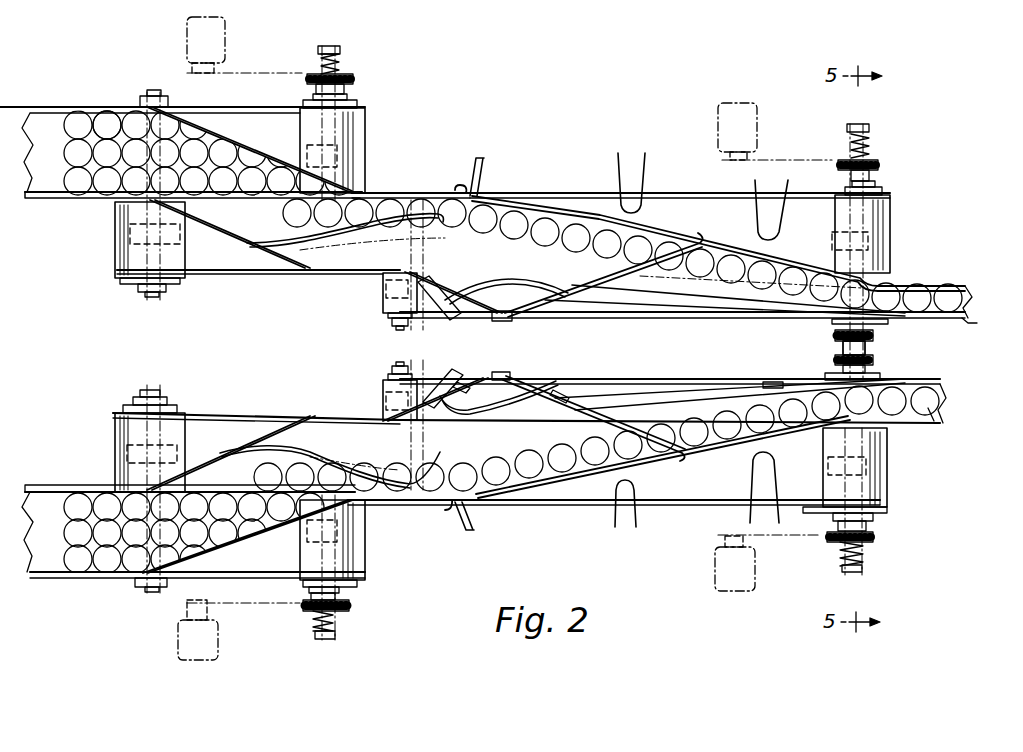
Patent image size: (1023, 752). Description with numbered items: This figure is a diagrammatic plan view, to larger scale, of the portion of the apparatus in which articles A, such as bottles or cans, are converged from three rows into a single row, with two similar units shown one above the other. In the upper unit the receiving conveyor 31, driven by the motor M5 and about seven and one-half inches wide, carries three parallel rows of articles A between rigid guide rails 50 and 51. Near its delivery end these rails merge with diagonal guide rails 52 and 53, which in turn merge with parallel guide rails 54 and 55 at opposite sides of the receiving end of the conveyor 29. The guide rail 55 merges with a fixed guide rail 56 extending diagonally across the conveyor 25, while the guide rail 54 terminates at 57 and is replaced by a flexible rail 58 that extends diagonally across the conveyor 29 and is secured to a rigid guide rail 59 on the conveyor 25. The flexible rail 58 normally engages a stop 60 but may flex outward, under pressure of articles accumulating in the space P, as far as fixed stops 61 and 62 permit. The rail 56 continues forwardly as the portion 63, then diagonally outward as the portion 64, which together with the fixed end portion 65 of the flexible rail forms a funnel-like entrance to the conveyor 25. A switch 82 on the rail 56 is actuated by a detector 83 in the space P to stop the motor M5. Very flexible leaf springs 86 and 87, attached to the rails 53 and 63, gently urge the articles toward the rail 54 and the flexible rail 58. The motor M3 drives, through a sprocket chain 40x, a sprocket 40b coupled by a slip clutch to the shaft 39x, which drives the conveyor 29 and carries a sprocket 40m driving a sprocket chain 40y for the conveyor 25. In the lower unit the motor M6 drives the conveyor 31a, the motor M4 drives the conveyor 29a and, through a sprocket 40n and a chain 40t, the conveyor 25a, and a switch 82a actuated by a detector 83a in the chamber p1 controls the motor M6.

The guide rail 50 is at (48, 108).
The articles A is at (103, 113).
The receiving conveyor 31 is at (161, 152).
The guide rail 51 is at (62, 200).
The diagonal guide rail 52 is at (252, 150).
The diagonal guide rail 53 is at (231, 234).
The flexible leaf spring 86 is at (309, 240).
The guide rail 55 is at (364, 273).
The guide rail 54 is at (401, 193).
The termination of guide rail 57 is at (458, 189).
The stop 60 is at (481, 172).
The conveyor 29 is at (692, 218).
The flexible guide rail 58 is at (545, 195).
The fixed stop 61 is at (622, 173).
The fixed stop 62 is at (779, 219).
The sprocket 40b is at (876, 161).
The shaft 39x is at (884, 182).
The sprocket chain 40x is at (810, 158).
The motor M3 is at (745, 116).
The motor M5 is at (223, 43).
The rigid guide rail 59 is at (906, 281).
The conveyor 25 is at (962, 284).
The guide rail portion 63 is at (569, 313).
The fixed end portion of flexible rail 65 is at (969, 319).
The fixed guide rail 56 is at (484, 305).
The space P is at (525, 267).
The detector 83 is at (522, 286).
The switch 82 is at (453, 308).
The flexible leaf spring 87 is at (628, 304).
The guide rail portion 64 is at (701, 300).
The sprocket 40m is at (833, 336).
The sprocket 40n is at (833, 360).
The sprocket chain 40y is at (878, 334).
The chain 40t is at (878, 361).
The conveyor 31a is at (52, 505).
The conveyor 29a is at (697, 501).
The switch 82a is at (412, 402).
The detector 83a is at (512, 400).
The chamber p1 is at (488, 458).
The conveyor 25a is at (929, 409).
The motor M4 is at (716, 570).
The motor M6 is at (212, 648).